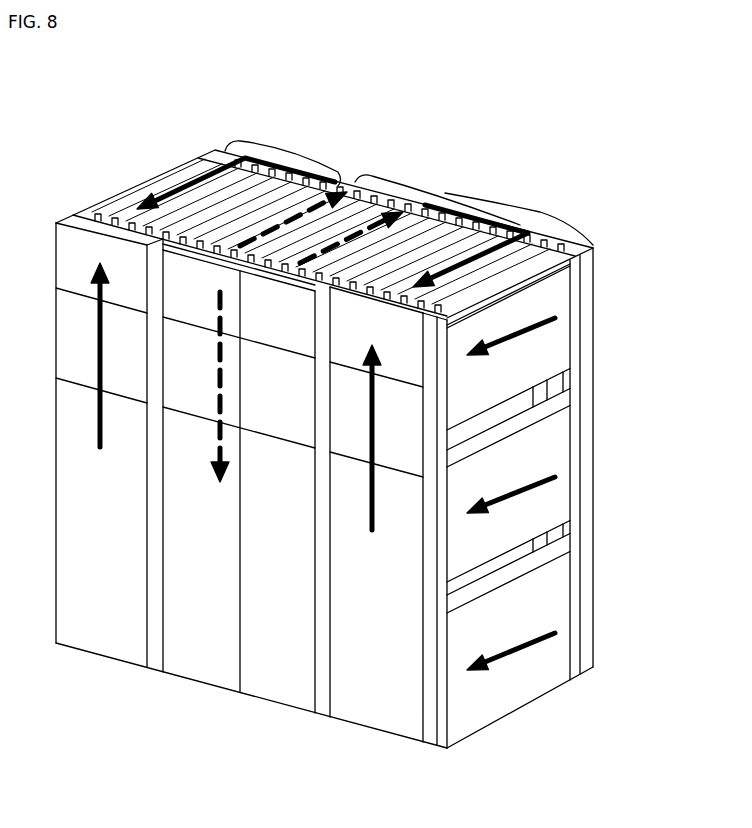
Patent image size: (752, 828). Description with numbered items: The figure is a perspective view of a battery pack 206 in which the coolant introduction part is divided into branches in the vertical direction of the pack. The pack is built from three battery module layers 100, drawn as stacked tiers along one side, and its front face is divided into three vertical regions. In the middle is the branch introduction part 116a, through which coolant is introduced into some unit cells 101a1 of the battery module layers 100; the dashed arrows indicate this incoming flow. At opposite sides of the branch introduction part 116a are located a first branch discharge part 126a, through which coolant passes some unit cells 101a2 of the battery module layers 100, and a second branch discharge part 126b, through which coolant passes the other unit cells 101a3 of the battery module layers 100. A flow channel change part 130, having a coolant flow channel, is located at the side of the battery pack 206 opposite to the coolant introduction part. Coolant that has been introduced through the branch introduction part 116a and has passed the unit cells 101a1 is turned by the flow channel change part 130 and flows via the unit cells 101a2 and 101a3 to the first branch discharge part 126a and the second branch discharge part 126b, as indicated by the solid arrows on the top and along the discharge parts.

The battery pack 206 is at (100, 105).
The battery module layers 100 is at (590, 624).
The second branch discharge part 126b is at (110, 650).
The branch introduction part 116a is at (222, 678).
The first branch discharge part 126a is at (358, 715).
The flow channel change part 130 is at (596, 418).
The unit cells 101a1 is at (402, 183).
The unit cells 101a2 is at (318, 163).
The unit cells 101a3 is at (548, 218).